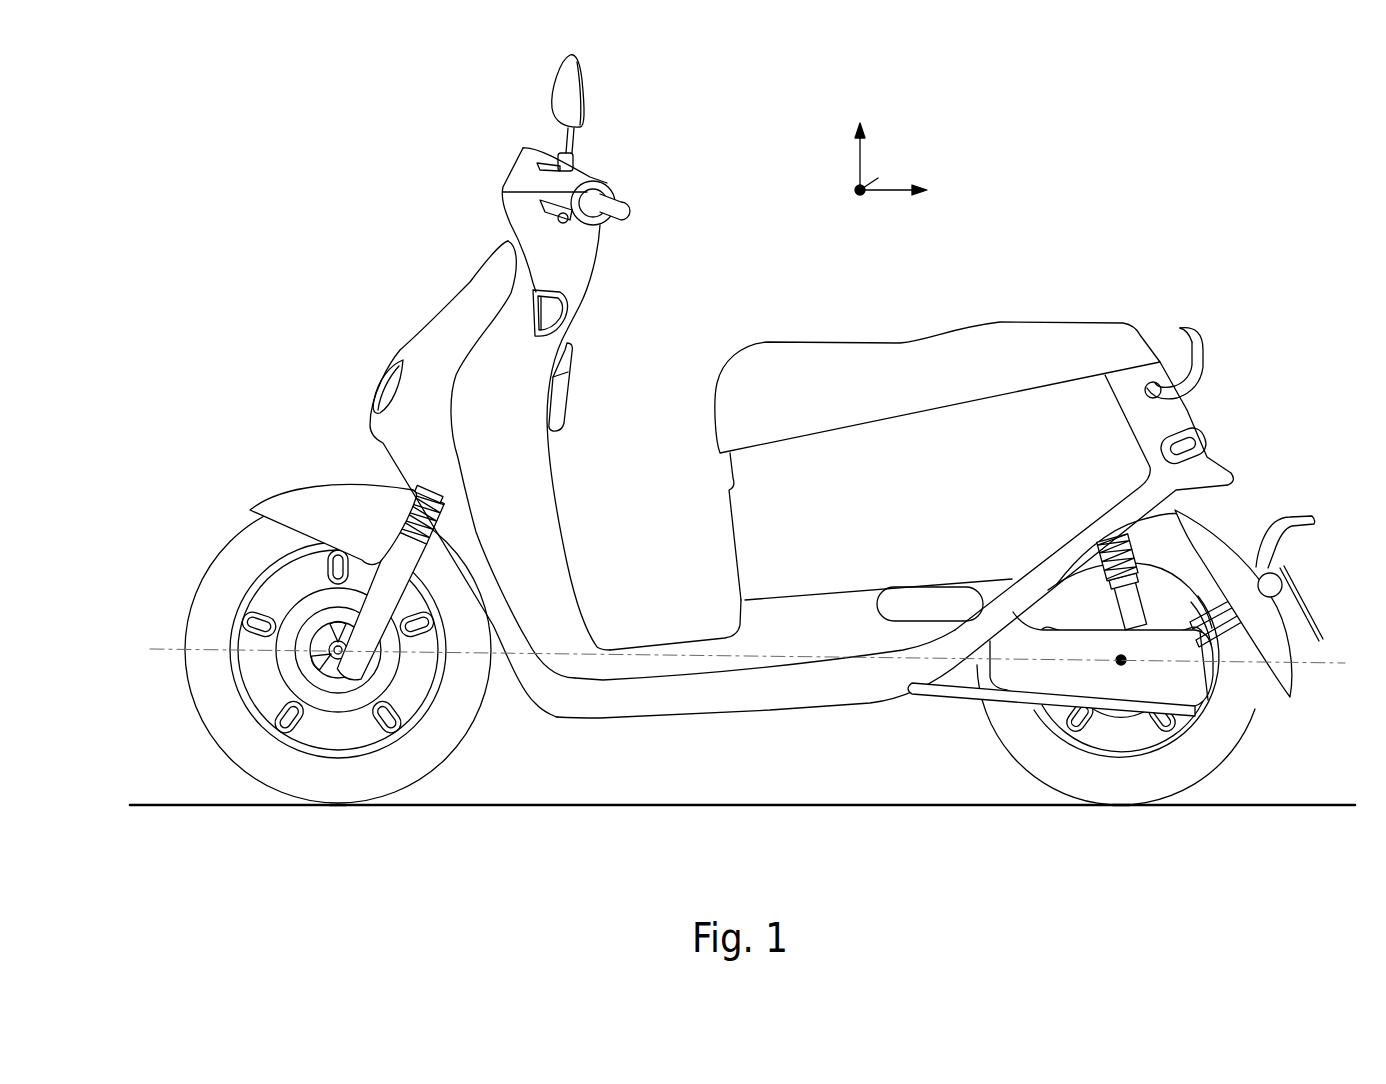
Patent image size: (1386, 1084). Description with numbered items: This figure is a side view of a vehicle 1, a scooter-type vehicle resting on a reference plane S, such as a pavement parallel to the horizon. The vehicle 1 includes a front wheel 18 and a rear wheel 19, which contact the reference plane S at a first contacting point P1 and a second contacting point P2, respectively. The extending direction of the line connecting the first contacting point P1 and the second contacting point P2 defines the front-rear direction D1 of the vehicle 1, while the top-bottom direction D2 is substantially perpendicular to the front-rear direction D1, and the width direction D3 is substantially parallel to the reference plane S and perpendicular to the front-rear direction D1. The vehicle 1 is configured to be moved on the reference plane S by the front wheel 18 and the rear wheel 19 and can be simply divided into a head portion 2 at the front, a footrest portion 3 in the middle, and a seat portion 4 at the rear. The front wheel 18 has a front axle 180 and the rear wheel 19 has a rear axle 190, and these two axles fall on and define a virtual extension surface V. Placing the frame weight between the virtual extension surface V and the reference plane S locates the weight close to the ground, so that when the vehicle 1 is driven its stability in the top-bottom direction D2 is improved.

The vehicle 1 is at (177, 69).
The head portion 2 is at (500, 733).
The footrest portion 3 is at (687, 758).
The seat portion 4 is at (898, 741).
The front wheel 18 is at (205, 624).
The front axle 180 is at (337, 650).
The rear wheel 19 is at (1223, 740).
The rear axle 190 is at (1121, 660).
The virtual extension surface V is at (1060, 660).
The reference plane S is at (163, 805).
The first contacting point P1 is at (337, 805).
The second contacting point P2 is at (1122, 805).
The front-rear direction D1 is at (893, 192).
The top-bottom direction D2 is at (860, 152).
The width direction D3 is at (860, 186).